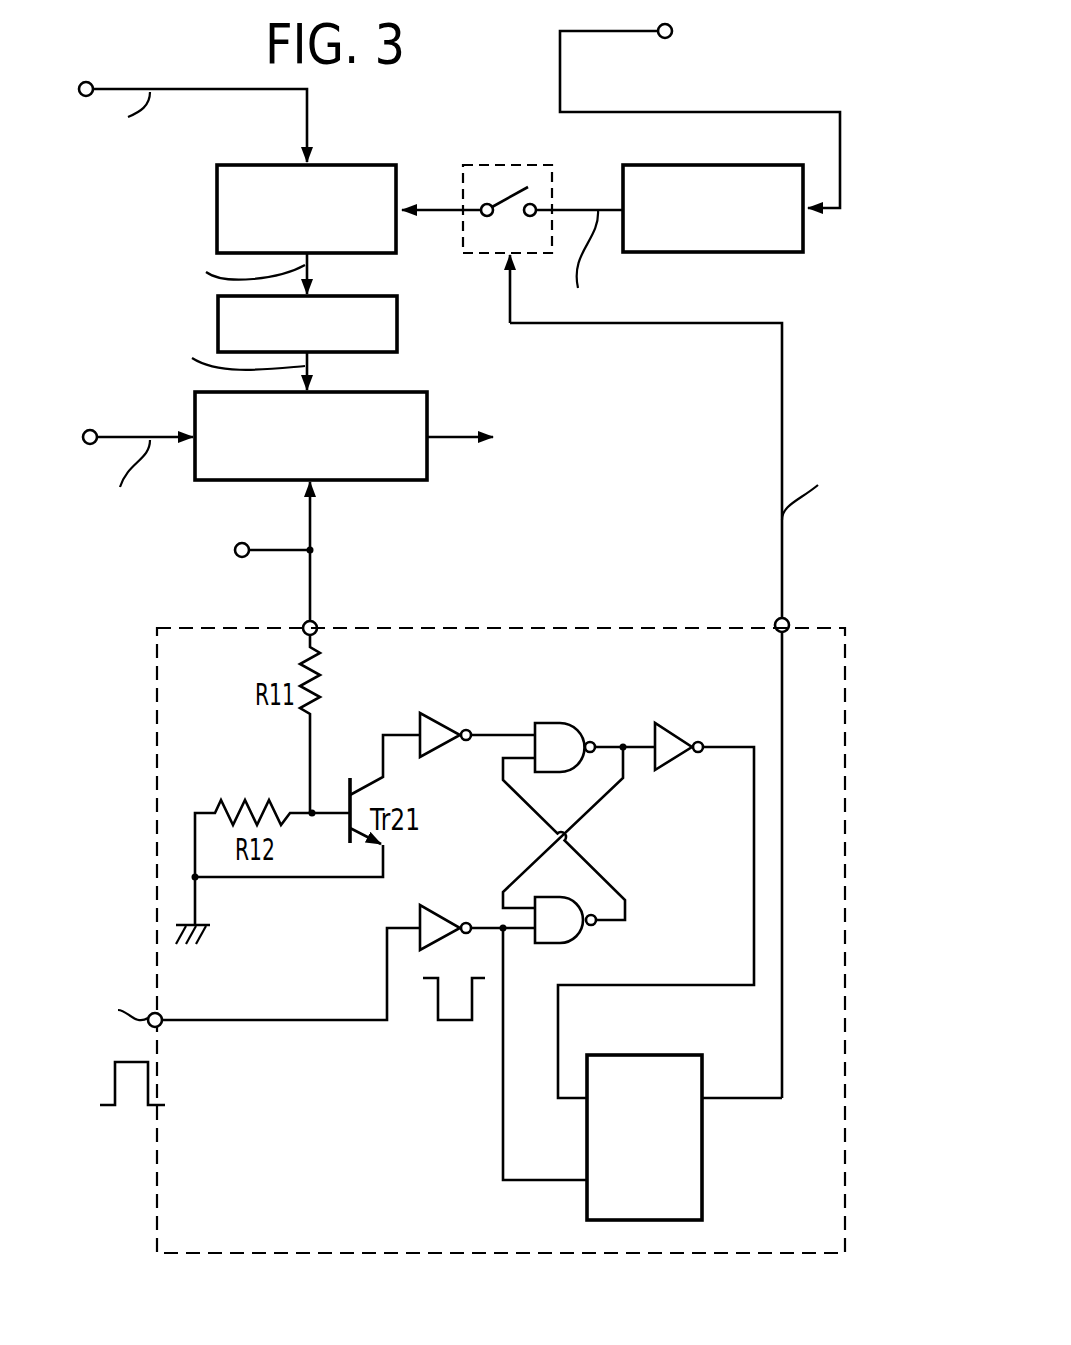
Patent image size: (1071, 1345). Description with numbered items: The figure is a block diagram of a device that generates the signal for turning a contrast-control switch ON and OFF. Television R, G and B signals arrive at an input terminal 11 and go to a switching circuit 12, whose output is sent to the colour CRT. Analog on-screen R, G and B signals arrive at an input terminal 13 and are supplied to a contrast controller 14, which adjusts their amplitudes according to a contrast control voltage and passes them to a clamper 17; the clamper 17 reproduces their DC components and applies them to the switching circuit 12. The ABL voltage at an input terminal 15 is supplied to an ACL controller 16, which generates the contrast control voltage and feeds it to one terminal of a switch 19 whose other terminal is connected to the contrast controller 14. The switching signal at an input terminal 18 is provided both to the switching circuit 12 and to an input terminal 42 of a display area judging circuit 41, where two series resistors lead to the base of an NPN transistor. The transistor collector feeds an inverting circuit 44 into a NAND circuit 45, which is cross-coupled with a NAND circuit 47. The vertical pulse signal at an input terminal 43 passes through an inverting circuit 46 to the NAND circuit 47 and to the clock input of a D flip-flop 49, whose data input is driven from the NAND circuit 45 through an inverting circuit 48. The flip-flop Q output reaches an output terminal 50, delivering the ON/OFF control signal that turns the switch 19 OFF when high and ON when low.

The input terminal 11 is at (93, 431).
The switching circuit 12 is at (385, 392).
The input terminal 13 is at (90, 83).
The contrast controller 14 is at (330, 165).
The input terminal 15 is at (662, 38).
The ACL controller 16 is at (708, 165).
The clamper 17 is at (400, 322).
The input terminal 18 is at (247, 543).
The switch 19 is at (512, 163).
The display area judging circuit 41 is at (558, 628).
The input terminal 42 is at (315, 620).
The input terminal 43 is at (160, 1013).
The inverting circuit 44 is at (445, 722).
The NAND circuit 45 is at (565, 722).
The inverting circuit 46 is at (445, 915).
The NAND circuit 47 is at (583, 940).
The inverting circuit 48 is at (680, 758).
The D flip-flop 49 is at (703, 1160).
The output terminal 50 is at (786, 618).